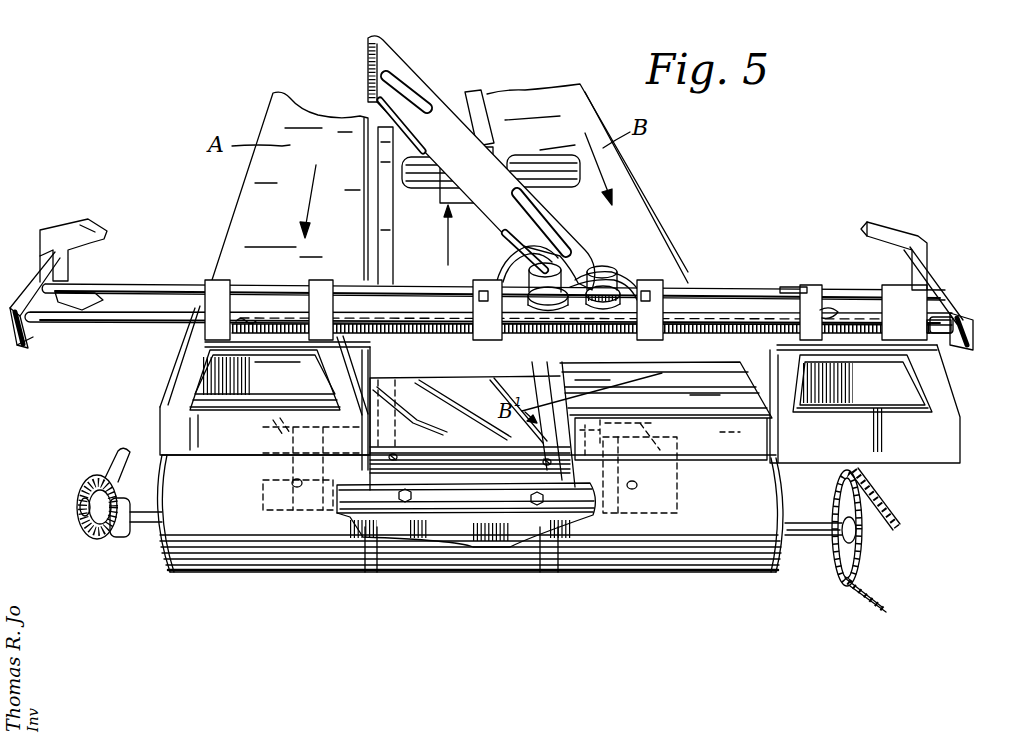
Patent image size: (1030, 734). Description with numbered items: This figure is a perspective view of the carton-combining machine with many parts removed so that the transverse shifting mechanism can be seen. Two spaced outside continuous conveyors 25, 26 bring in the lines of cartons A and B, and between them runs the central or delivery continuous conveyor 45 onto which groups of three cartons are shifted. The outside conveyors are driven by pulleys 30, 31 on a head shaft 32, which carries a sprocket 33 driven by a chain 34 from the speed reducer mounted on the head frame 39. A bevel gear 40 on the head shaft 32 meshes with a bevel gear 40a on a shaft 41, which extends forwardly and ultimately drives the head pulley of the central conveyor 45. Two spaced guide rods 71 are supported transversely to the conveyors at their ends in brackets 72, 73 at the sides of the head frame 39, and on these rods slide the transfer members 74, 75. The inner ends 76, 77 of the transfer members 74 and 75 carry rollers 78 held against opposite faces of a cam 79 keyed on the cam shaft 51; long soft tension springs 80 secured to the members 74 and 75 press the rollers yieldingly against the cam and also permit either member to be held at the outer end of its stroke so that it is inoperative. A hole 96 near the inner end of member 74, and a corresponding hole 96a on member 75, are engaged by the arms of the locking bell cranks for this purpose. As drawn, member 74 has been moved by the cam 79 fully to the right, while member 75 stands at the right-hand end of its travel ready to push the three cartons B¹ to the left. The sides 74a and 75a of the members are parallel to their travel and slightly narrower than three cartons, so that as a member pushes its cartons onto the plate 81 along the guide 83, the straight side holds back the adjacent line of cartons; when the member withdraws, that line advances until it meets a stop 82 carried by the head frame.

The continuous conveyor 25 is at (296, 118).
The continuous conveyor 26 is at (515, 104).
The central or delivery continuous conveyor 45 is at (513, 263).
The cam shaft 51 is at (547, 174).
The cam 79 is at (420, 84).
The hole 96 is at (530, 262).
The hole 96a is at (646, 298).
The rollers 78 is at (613, 285).
The guide rods 71 is at (125, 316).
The tension springs 80 is at (283, 292).
The inner end of transfer member 76 is at (489, 342).
The inner end of transfer member 77 is at (606, 342).
The bracket 72 is at (78, 236).
The bracket 73 is at (905, 233).
The transfer member 74 is at (190, 373).
The side of transfer member 74a is at (280, 374).
The transfer member 75 is at (943, 386).
The side of transfer member 75a is at (893, 383).
The plate 81 is at (443, 403).
The guide 83 is at (483, 452).
The stop 82 is at (285, 437).
The pulley 30 is at (162, 548).
The head frame 39 is at (290, 528).
The head shaft 32 is at (140, 540).
The bevel gear 40 is at (108, 540).
The bevel gear 40a is at (76, 515).
The shaft 41 is at (110, 458).
The pulley 31 is at (777, 572).
The sprocket 33 is at (863, 557).
The chain 34 is at (893, 530).